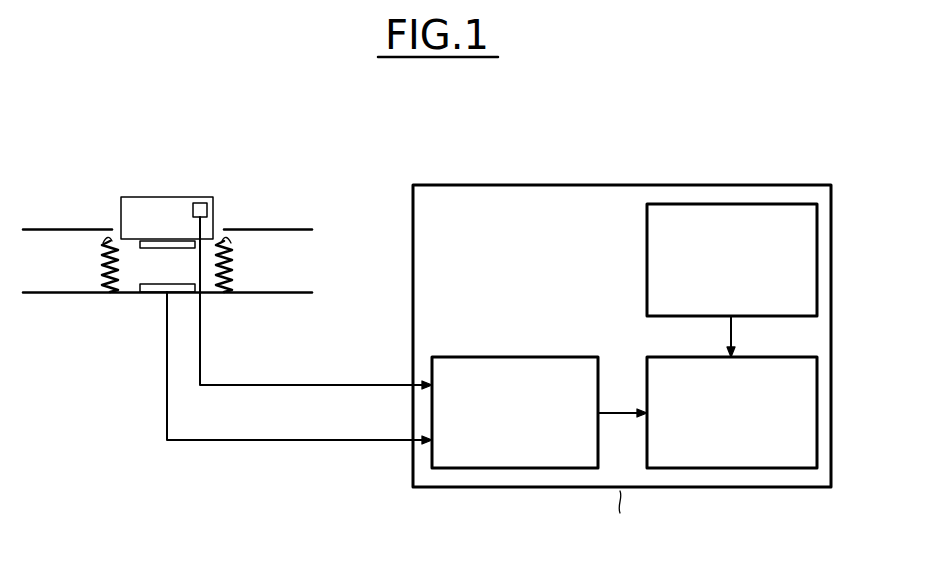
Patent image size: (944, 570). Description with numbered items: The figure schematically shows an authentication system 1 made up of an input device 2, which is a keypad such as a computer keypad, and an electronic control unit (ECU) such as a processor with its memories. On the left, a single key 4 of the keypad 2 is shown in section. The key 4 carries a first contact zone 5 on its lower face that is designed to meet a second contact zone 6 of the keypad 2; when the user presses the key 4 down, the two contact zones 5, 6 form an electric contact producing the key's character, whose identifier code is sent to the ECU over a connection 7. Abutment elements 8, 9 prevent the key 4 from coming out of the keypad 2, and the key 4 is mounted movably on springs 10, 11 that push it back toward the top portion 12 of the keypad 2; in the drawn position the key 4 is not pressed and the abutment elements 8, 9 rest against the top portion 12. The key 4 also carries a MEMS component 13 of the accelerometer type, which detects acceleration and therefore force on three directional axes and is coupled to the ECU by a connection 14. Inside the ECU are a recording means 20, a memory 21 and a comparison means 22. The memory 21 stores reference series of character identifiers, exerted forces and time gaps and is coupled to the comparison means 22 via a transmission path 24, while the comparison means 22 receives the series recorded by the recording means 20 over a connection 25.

The authentication system 1 is at (675, 121).
The input device 2 is at (130, 152).
The key 4 is at (121, 212).
The first contact zone 5 is at (165, 245).
The second contact zone 6 is at (147, 291).
The connection 7 is at (300, 443).
The abutment element 8 is at (103, 243).
The abutment element 9 is at (231, 243).
The spring 10 is at (101, 282).
The spring 11 is at (233, 281).
The top portion 12 is at (266, 229).
The MEMS component of accelerometer type 13 is at (200, 203).
The connection 14 is at (314, 383).
The recording means 20 is at (461, 356).
The memory 21 is at (646, 305).
The comparison means 22 is at (732, 412).
The transmission path 24 is at (730, 336).
The connection 25 is at (620, 408).